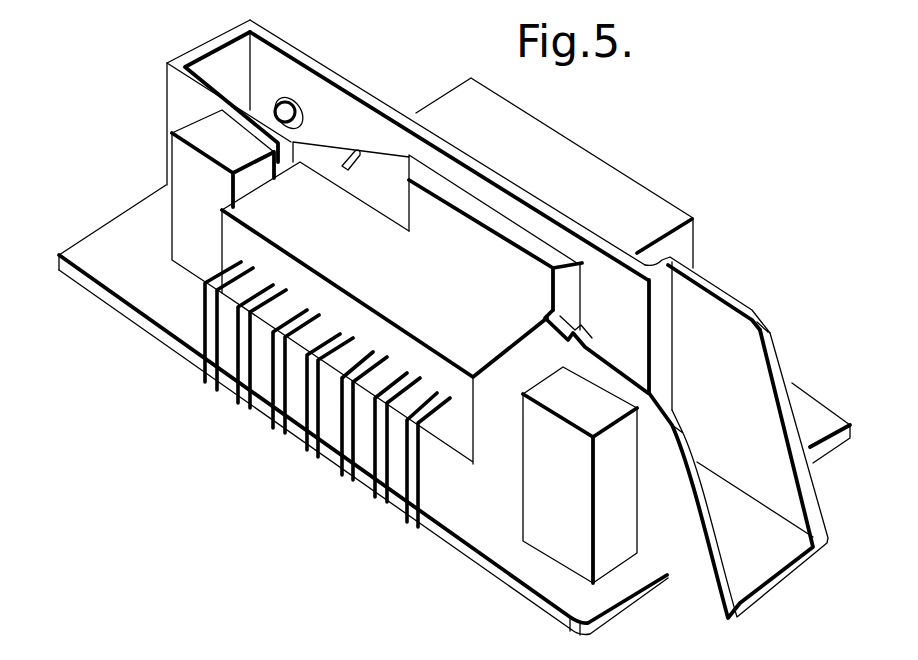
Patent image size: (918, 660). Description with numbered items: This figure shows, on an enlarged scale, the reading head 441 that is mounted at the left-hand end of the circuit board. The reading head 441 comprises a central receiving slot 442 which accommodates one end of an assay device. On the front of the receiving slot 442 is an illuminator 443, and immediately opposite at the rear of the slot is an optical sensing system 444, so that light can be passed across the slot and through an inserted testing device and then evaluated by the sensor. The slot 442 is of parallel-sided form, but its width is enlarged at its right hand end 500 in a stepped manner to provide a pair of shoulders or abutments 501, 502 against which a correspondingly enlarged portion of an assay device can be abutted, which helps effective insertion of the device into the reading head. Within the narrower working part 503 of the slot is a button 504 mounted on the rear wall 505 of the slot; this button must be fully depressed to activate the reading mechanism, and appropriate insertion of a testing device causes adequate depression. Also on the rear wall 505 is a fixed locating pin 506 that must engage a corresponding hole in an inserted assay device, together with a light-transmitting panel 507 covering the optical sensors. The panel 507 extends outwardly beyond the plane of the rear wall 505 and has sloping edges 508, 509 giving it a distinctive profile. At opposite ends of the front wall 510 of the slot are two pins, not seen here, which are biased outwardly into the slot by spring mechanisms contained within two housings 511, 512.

The reading head 441 is at (110, 247).
The receiving slot 442 is at (230, 68).
The illuminator 443 is at (499, 437).
The optical sensing system 444 is at (610, 170).
The right hand end 500 is at (772, 333).
The shoulder 501 is at (591, 345).
The shoulder 502 is at (658, 367).
The narrower working part 503 is at (387, 140).
The button 504 is at (285, 98).
The rear wall 505 is at (362, 94).
The locating pin 506 is at (342, 168).
The light-transmitting panel 507 is at (443, 235).
The sloping edge 508 is at (466, 202).
The sloping edge 509 is at (567, 290).
The front wall 510 is at (183, 93).
The housing 511 is at (197, 180).
The housing 512 is at (608, 540).